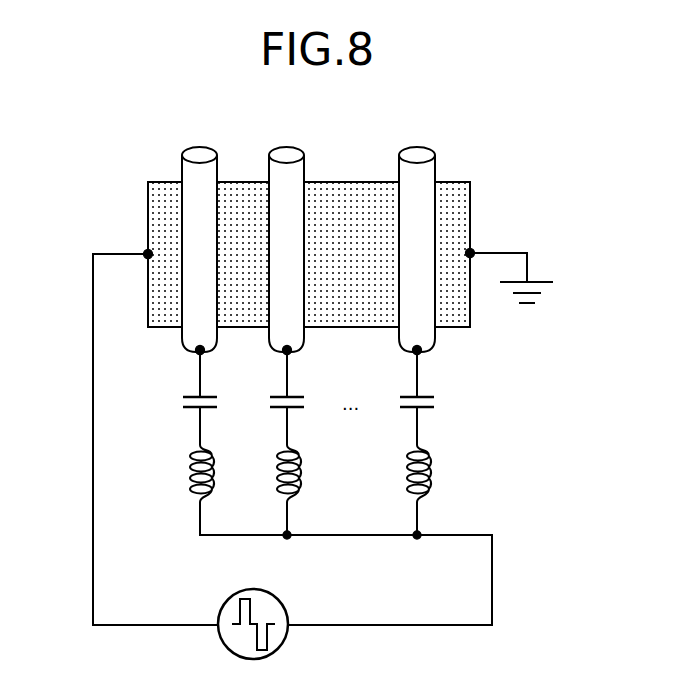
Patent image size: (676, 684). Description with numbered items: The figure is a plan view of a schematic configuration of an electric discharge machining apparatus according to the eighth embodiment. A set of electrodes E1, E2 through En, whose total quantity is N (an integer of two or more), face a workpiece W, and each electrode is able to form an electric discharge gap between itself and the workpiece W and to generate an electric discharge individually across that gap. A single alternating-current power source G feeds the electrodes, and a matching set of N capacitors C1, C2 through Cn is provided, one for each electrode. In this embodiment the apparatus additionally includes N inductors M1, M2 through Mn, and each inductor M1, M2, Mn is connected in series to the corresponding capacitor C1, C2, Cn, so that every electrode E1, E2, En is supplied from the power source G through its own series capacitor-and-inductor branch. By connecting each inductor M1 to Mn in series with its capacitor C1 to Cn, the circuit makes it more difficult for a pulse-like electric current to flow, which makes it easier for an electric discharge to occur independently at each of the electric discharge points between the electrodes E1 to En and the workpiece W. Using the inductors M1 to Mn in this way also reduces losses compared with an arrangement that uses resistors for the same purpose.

The workpiece W is at (148, 196).
The electrode E1 is at (201, 146).
The electrode E2 is at (288, 146).
The electrode En is at (416, 146).
The capacitor C1 is at (210, 400).
The capacitor C2 is at (297, 400).
The capacitor Cn is at (429, 400).
The inductor M1 is at (213, 453).
The inductor M2 is at (300, 453).
The inductor Mn is at (430, 453).
The alternating-current power source G is at (287, 599).